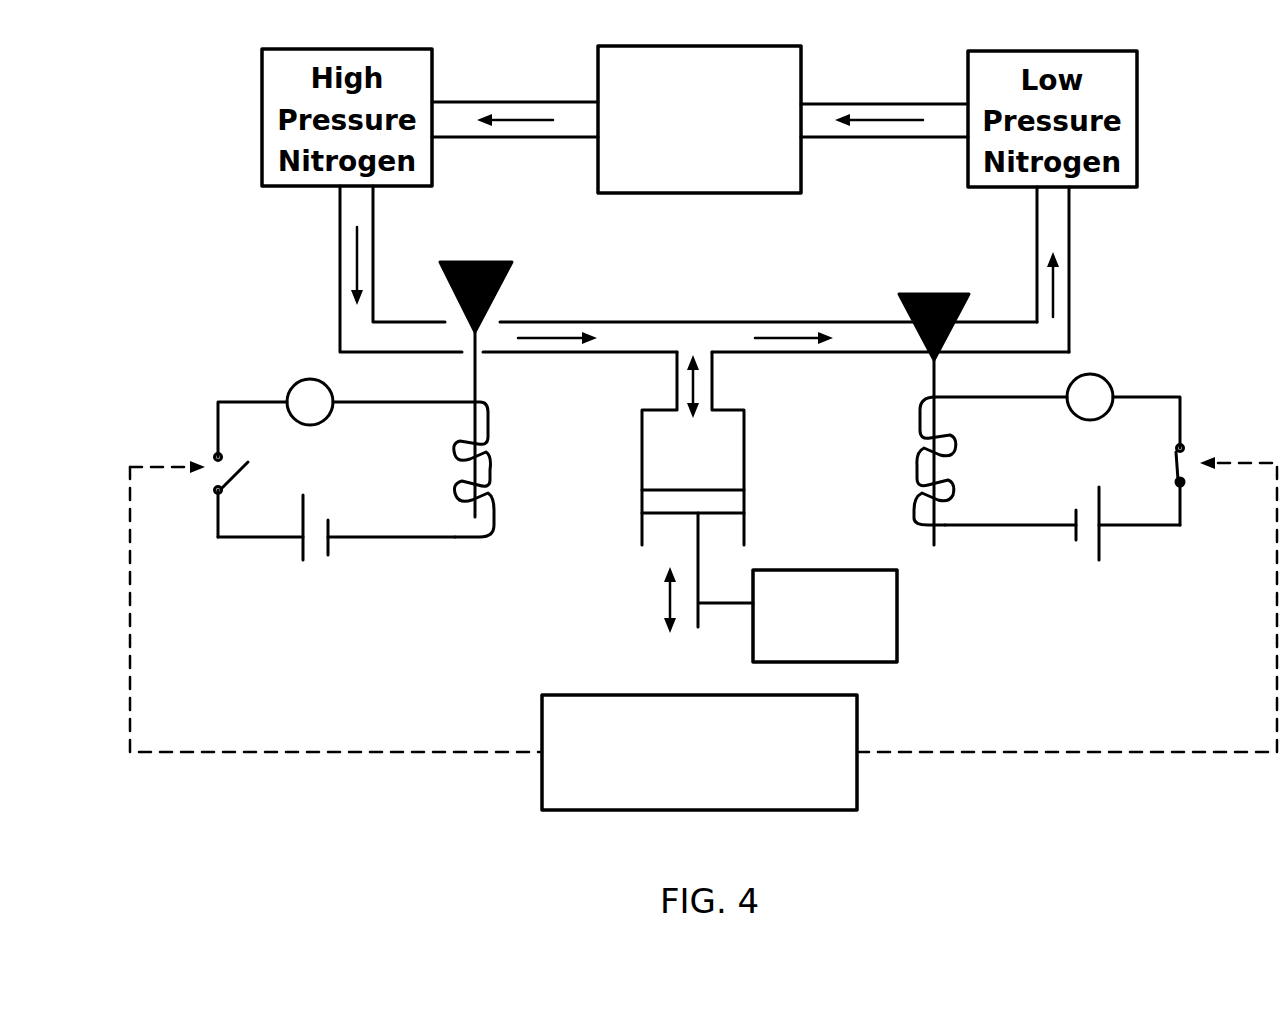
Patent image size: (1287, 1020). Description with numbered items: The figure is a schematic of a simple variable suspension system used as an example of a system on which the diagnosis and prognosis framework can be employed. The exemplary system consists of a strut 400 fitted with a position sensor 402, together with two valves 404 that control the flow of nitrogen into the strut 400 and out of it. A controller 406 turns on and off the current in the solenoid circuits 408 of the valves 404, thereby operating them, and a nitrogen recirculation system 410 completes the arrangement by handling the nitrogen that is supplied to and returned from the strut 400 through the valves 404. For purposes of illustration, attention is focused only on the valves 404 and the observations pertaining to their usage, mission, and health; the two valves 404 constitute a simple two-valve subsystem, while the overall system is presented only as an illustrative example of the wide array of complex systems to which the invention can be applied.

The strut 400 is at (642, 468).
The position sensor 402 is at (897, 588).
The valves 404 is at (500, 262).
The controller 406 is at (542, 787).
The solenoid circuits 408 is at (412, 620).
The nitrogen recirculation system 410 is at (687, 193).